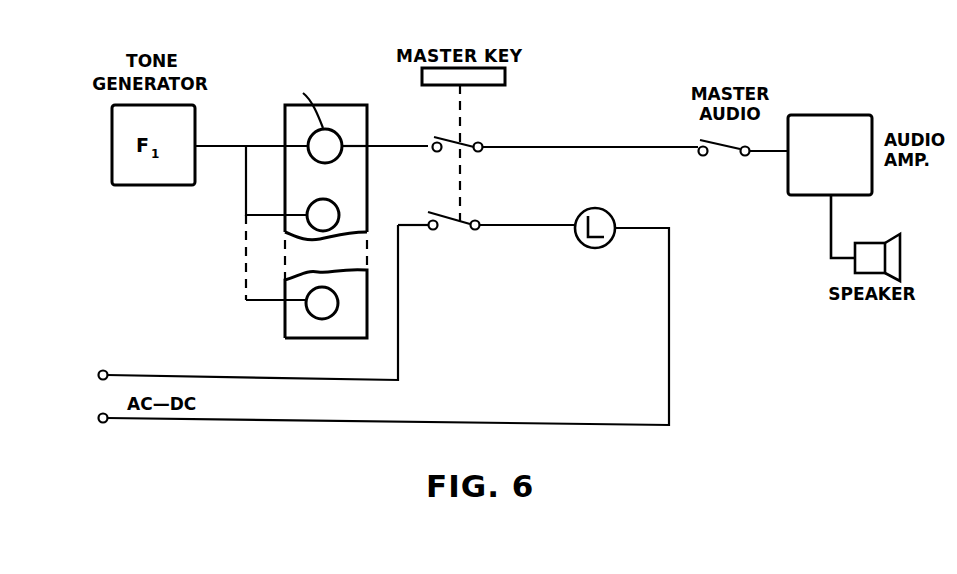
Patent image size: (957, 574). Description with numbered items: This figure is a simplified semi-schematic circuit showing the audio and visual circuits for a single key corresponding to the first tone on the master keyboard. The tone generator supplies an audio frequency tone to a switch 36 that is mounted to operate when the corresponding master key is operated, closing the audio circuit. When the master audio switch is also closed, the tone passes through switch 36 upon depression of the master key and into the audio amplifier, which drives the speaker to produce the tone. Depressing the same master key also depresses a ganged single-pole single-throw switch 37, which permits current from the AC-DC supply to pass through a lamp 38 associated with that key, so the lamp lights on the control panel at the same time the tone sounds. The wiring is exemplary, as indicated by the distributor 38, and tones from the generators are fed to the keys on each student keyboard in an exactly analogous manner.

The switch 36 is at (462, 144).
The single-pole single-throw switch 37 is at (465, 221).
The lamp 38 is at (286, 118).